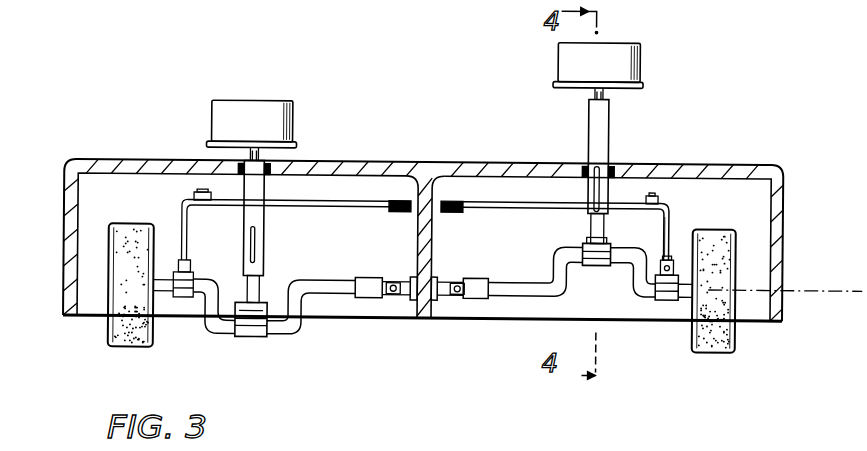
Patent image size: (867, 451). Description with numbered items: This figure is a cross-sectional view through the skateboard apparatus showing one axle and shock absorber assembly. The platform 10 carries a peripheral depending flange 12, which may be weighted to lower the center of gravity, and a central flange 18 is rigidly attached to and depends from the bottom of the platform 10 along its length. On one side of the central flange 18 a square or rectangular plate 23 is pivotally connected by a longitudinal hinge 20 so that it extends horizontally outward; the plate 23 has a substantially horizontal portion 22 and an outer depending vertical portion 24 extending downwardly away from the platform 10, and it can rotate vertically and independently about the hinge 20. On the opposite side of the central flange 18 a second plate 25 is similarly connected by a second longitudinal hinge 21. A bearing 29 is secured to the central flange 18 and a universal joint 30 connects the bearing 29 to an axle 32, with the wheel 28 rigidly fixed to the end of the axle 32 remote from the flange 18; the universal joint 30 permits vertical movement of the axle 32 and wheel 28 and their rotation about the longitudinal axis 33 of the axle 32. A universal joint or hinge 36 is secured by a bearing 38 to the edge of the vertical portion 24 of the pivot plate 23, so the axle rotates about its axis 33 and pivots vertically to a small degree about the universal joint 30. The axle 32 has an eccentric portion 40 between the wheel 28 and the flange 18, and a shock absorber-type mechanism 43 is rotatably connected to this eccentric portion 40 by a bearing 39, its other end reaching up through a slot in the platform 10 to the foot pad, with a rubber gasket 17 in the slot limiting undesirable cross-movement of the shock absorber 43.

The platform 10 is at (133, 161).
The peripheral depending flange 12 is at (63, 246).
The rubber gasket 17 is at (611, 165).
The central flange 18 is at (417, 244).
The longitudinal hinge 20 is at (447, 202).
The second longitudinal hinge 21 is at (405, 206).
The horizontal portion 22 is at (622, 203).
The plate 23 is at (496, 195).
The outer depending vertical portion 24 is at (670, 219).
The second plate 25 is at (306, 196).
The wheel 28 is at (735, 346).
The bearing 29 is at (433, 300).
The universal joint 30 is at (470, 283).
The axle 32 is at (507, 285).
The longitudinal axis 33 is at (807, 287).
The universal joint or hinge 36 is at (672, 265).
The bearing 38 is at (664, 298).
The bearing 39 is at (595, 267).
The eccentric portion 40 is at (640, 244).
The shock absorber-type mechanism 43 is at (605, 117).